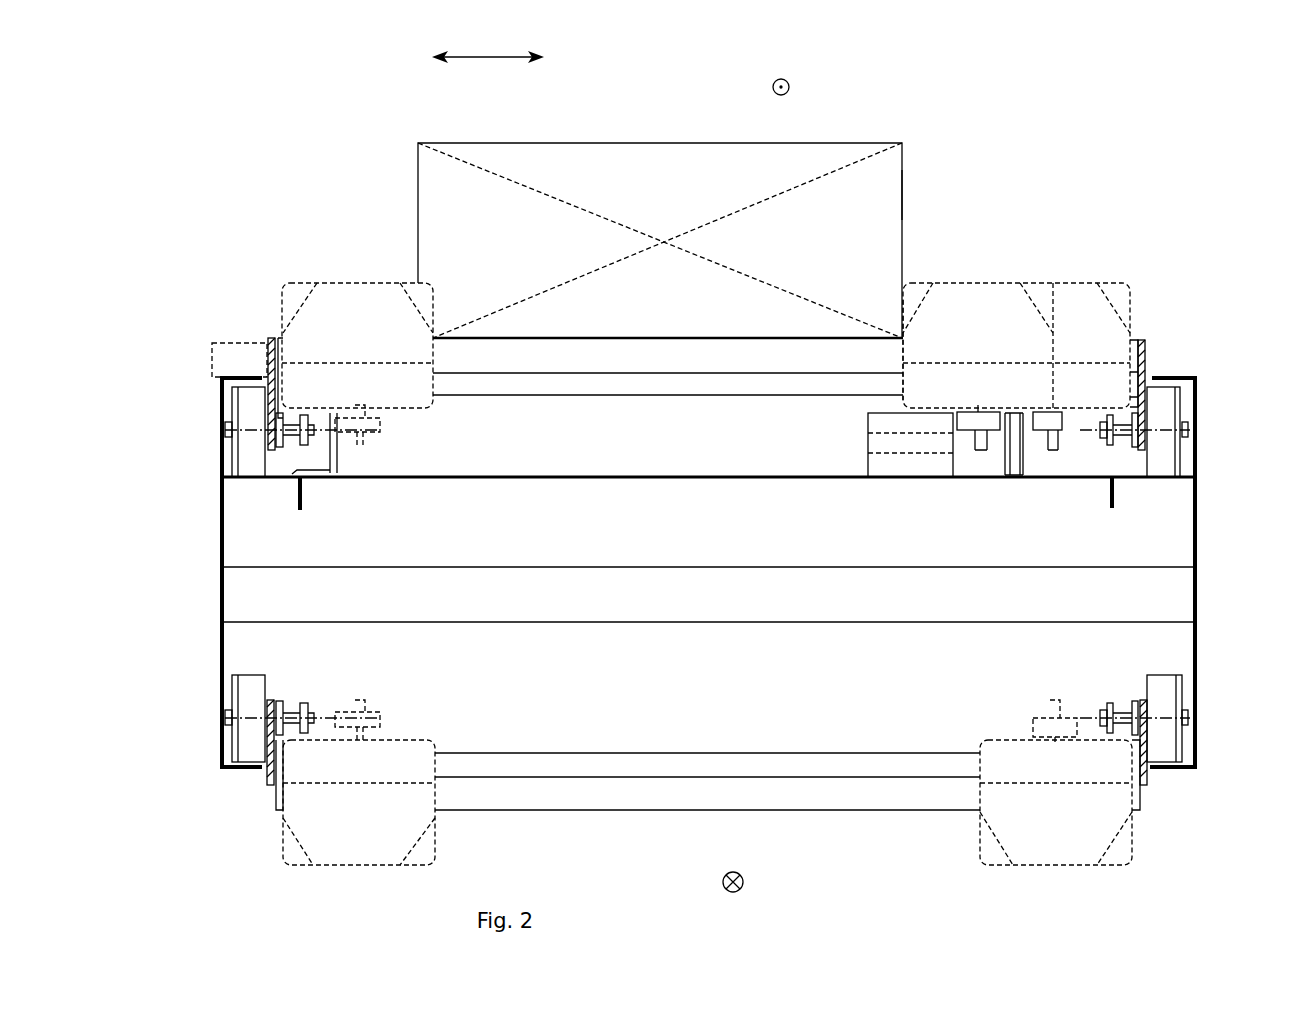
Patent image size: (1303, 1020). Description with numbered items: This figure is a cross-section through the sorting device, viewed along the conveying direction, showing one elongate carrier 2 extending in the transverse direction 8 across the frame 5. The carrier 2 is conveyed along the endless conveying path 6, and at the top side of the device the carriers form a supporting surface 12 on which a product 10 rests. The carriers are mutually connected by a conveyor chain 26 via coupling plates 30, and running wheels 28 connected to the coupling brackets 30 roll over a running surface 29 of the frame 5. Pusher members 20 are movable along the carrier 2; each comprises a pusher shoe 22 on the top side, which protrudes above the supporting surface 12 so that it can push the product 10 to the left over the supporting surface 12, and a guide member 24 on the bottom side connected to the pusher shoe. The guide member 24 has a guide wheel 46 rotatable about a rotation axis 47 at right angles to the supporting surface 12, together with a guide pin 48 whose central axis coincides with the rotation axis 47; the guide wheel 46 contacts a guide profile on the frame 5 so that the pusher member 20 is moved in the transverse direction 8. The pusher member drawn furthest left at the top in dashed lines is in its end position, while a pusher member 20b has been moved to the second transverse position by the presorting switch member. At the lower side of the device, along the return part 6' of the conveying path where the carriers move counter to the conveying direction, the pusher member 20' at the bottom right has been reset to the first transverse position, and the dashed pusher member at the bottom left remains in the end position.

The carrier 2 is at (745, 362).
The frame 5 is at (222, 548).
The conveying path 6 is at (799, 76).
The return part of the conveying path 6' is at (756, 889).
The transverse direction 8 is at (485, 57).
The product 10 is at (882, 195).
The supporting surface 12 is at (617, 338).
The pusher member 20 is at (735, 303).
The pusher member in first transverse position 20' is at (767, 802).
The pusher member in second transverse position 20b is at (1026, 266).
The pusher shoe 22 is at (970, 310).
The guide member 24 is at (950, 440).
The conveyor chain 26 is at (290, 440).
The running wheel 28 is at (238, 405).
The running surface 29 is at (255, 480).
The coupling plate 30 is at (270, 345).
The guide wheel 46 is at (955, 418).
The rotation axis 47 is at (1010, 440).
The guide pin 48 is at (983, 452).